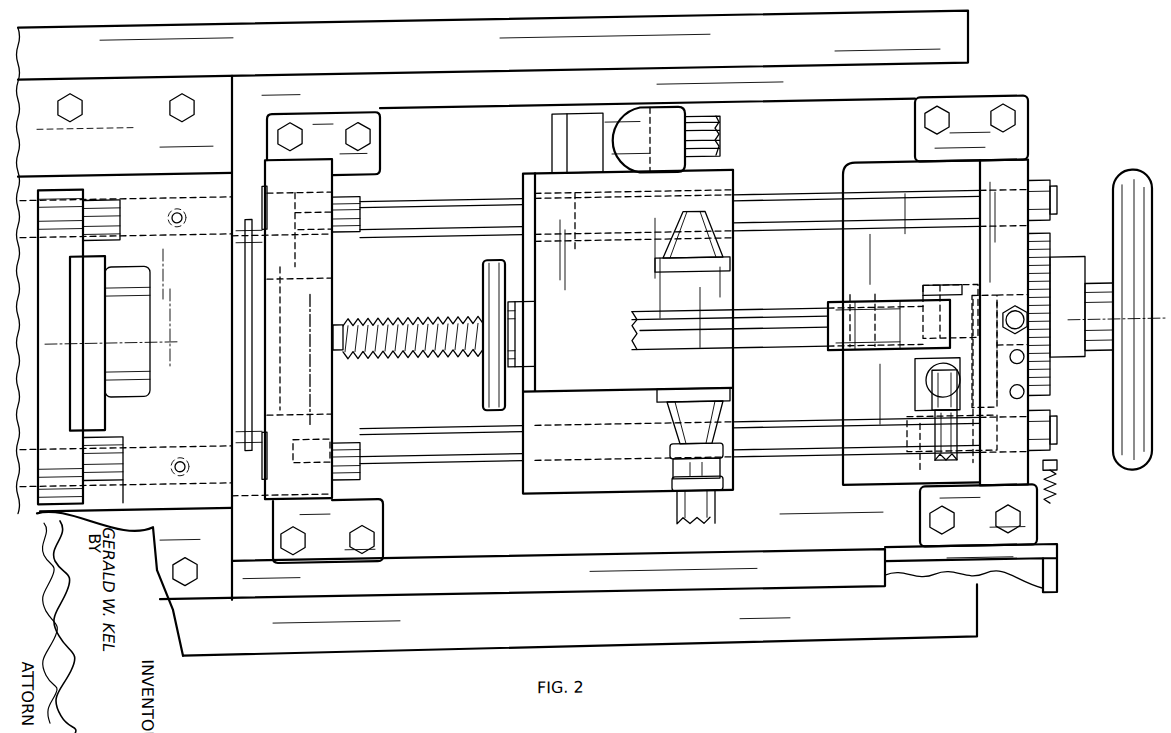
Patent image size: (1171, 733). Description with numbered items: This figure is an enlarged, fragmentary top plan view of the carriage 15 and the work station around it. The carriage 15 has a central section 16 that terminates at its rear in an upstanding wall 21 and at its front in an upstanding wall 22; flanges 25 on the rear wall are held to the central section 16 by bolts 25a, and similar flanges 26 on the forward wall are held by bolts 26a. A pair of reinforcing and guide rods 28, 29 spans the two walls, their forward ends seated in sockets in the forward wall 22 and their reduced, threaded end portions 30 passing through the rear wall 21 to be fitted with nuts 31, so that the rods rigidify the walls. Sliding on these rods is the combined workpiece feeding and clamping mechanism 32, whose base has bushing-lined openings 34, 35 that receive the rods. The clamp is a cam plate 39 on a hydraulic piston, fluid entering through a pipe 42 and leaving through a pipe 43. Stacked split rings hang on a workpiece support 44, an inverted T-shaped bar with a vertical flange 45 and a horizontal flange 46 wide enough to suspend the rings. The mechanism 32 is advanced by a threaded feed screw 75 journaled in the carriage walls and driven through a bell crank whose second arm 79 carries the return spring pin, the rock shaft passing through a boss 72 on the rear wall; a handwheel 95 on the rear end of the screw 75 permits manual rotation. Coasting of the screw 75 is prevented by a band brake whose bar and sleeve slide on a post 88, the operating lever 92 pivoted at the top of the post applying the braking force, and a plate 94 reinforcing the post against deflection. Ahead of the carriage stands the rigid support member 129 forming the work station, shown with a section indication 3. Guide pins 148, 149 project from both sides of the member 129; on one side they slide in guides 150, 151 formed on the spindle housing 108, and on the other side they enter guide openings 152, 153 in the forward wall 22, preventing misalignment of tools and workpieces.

The section line 3 is at (33, 346).
The carriage 15 is at (524, 108).
The central section 16 is at (490, 552).
The upstanding wall 21 is at (1030, 269).
The upstanding wall 22 is at (333, 189).
The flanges 25 is at (1025, 121).
The bolts 25a is at (1000, 136).
The flanges 26 is at (337, 128).
The bolts 26a is at (366, 142).
The reinforcing and guide rod 28 is at (785, 214).
The reinforcing and guide rod 29 is at (757, 468).
The reduced, threaded end portions 30 is at (1012, 201).
The nuts 31 is at (1048, 219).
The combined workpiece feeding and clamping mechanism 32 is at (740, 299).
The bushing lined opening 34 is at (623, 499).
The bushing lined opening 35 is at (735, 193).
The cam plate 39 is at (485, 296).
The pipe 42 is at (703, 518).
The pipe 43 is at (718, 148).
The workpiece support 44 is at (853, 309).
The vertical flange 45 is at (788, 334).
The horizontal flange 46 is at (753, 327).
The boss 72 is at (1070, 481).
The threaded feed screw 75 is at (373, 327).
The second arm 79 is at (900, 494).
The post 88 is at (940, 402).
The operating lever 92 is at (947, 457).
The plate 94 is at (915, 415).
The handwheel 95 is at (1148, 191).
The housing 108 is at (80, 305).
The rigid support member 129 is at (238, 184).
The guide pin 148 is at (100, 217).
The guide pin 149 is at (125, 467).
The guide 150 is at (55, 201).
The guide 151 is at (85, 497).
The guide opening 152 is at (362, 207).
The guide opening 153 is at (320, 446).